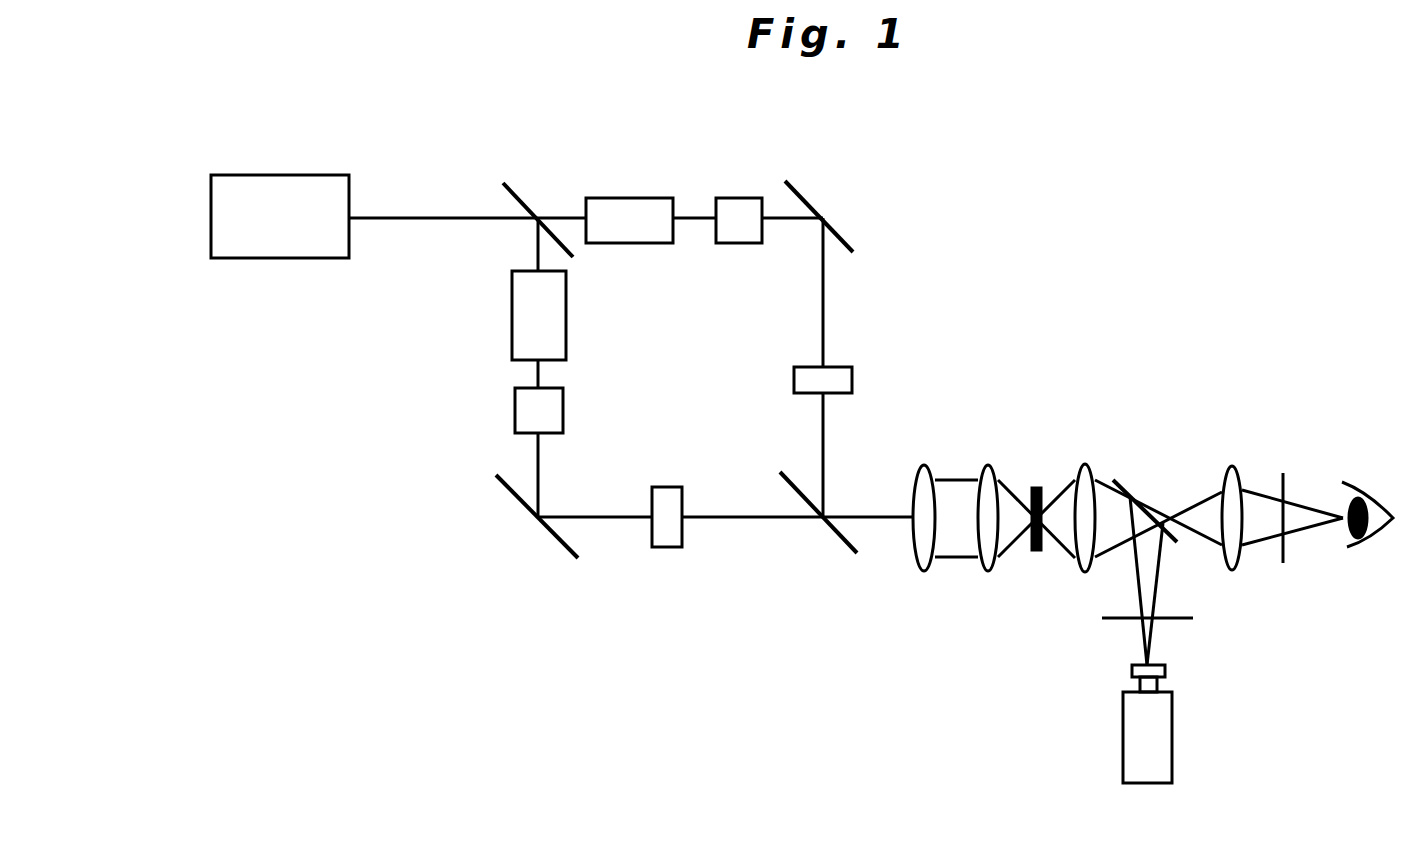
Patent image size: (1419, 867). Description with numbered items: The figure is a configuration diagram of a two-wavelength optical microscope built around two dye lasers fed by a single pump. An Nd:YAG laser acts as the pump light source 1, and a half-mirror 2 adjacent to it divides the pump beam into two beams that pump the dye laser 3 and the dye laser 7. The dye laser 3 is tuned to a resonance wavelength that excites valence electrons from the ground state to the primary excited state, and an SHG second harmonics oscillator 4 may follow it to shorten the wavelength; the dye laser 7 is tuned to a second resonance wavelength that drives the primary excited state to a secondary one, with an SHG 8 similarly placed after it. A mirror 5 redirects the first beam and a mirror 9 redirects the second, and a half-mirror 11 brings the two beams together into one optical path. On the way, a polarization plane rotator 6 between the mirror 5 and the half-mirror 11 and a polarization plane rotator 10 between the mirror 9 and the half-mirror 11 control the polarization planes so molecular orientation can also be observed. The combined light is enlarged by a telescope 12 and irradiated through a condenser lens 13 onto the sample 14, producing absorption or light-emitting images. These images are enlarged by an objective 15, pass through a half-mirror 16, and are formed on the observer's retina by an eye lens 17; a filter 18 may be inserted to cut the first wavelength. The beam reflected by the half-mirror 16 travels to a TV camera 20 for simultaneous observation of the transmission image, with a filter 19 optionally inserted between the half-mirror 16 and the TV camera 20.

The pump light source 1 is at (277, 243).
The half-mirror 2 is at (519, 201).
The dye laser 3 is at (628, 198).
The SHG second harmonics oscillator 4 is at (735, 198).
The mirror 5 is at (812, 196).
The polarization plane rotator 6 is at (852, 378).
The dye laser 7 is at (512, 311).
The SHG 8 is at (515, 408).
The mirror 9 is at (523, 507).
The polarization plane rotator 10 is at (665, 547).
The half-mirror 11 is at (837, 538).
The telescope 12 is at (923, 572).
The condenser lens 13 is at (985, 572).
The sample 14 is at (1033, 488).
The objective 15 is at (1083, 572).
The half-mirror 16 is at (1170, 535).
The eye lens 17 is at (1236, 570).
The filter 18 is at (1287, 562).
The filter 19 is at (1117, 620).
The TV camera 20 is at (1123, 742).